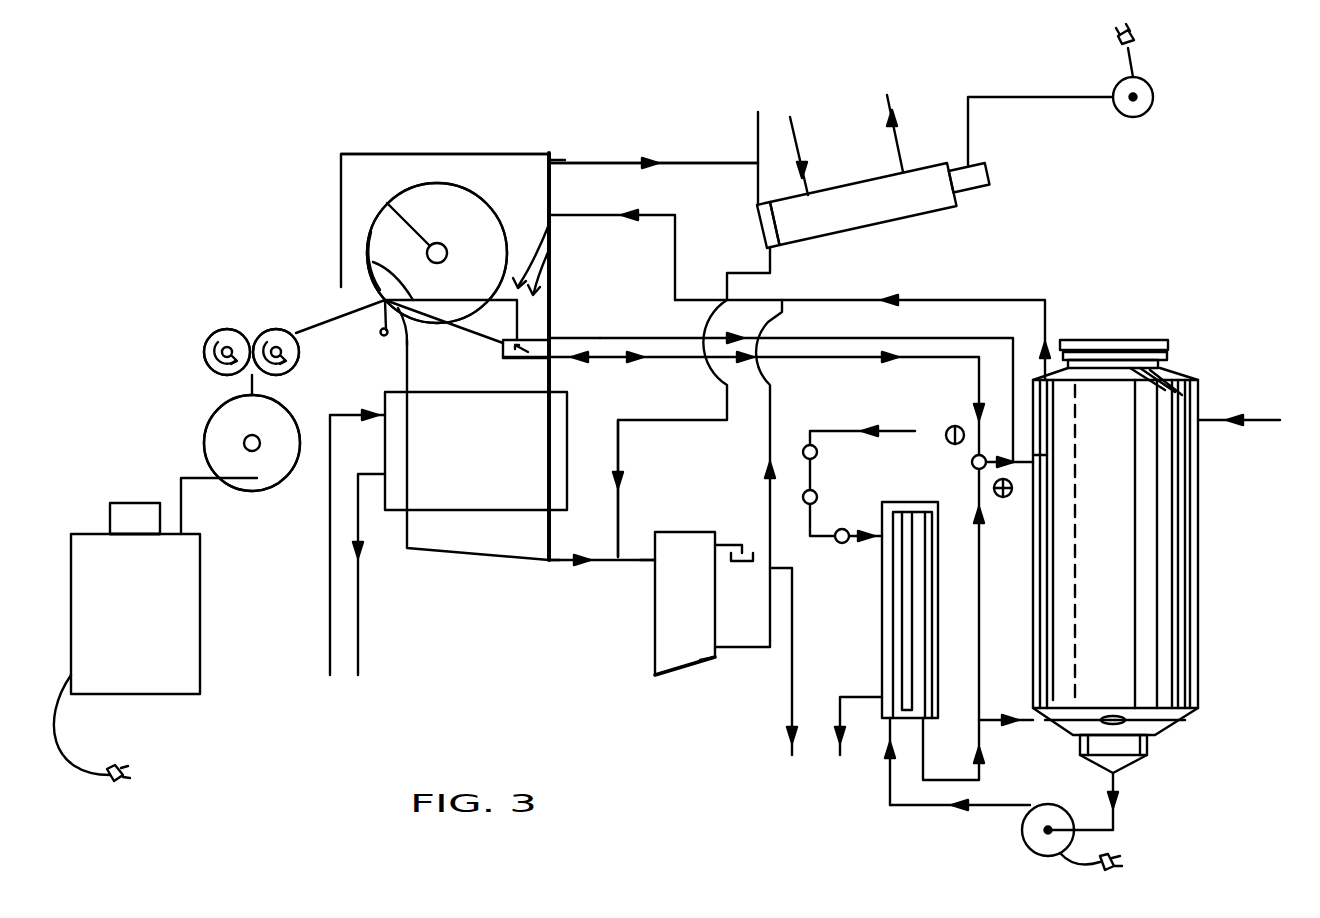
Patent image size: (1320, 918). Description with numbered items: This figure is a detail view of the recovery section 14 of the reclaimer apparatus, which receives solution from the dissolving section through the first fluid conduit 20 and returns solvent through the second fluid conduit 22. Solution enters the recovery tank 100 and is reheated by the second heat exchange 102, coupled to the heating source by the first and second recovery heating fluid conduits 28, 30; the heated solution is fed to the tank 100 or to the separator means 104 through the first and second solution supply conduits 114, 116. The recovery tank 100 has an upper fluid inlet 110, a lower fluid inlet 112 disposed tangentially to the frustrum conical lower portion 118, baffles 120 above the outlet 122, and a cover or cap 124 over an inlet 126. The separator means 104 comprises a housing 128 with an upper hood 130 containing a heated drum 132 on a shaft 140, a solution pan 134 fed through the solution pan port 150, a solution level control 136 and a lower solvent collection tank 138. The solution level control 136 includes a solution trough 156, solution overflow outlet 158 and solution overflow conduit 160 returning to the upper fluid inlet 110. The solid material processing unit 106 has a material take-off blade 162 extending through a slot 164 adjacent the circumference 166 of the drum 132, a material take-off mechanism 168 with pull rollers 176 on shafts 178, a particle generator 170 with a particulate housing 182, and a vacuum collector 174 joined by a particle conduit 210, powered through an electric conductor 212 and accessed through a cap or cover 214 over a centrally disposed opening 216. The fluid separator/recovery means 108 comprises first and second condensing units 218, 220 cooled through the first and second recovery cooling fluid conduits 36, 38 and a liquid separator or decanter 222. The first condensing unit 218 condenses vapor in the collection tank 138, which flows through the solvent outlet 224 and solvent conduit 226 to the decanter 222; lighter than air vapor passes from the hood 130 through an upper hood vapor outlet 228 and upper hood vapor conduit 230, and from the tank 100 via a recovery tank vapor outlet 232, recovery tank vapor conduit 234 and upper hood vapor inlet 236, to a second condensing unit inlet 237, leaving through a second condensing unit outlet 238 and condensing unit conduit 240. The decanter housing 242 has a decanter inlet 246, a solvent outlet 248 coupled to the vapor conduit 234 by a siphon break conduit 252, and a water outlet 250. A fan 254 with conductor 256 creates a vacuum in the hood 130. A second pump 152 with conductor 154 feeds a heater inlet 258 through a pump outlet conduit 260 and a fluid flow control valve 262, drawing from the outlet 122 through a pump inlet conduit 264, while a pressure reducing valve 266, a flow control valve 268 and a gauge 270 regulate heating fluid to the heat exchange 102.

The recovery section 14 is at (434, 50).
The first fluid conduit 20 is at (1262, 422).
The second fluid conduit 22 is at (792, 700).
The first recovery heating fluid conduit 28 is at (890, 431).
The second recovery heating fluid conduit 30 is at (870, 697).
The first recovery cooling fluid conduit 36 is at (803, 143).
The second recovery cooling fluid conduit 38 is at (900, 150).
The recovery tank 100 is at (1198, 492).
The second heat exchange 102 is at (882, 600).
The separator means 104 is at (313, 130).
The solid material processing unit 106 is at (190, 256).
The fluid separator/recovery means 108 is at (690, 86).
The upper fluid inlet 110 is at (1042, 465).
The lower fluid inlet 112 is at (1185, 716).
The first solution supply conduit 114 is at (1033, 722).
The second solution supply conduit 116 is at (795, 358).
The frustrum conical lower portion 118 is at (1165, 730).
The baffles 120 is at (1045, 640).
The outlet 122 is at (1140, 760).
The cover or cap 124 is at (1100, 340).
The inlet 126 is at (1175, 385).
The housing 128 is at (472, 197).
The upper hood 130 is at (383, 173).
The heated drum 132 is at (466, 153).
The solution pan 134 is at (373, 262).
The solution level control 136 is at (560, 215).
The lower solvent collection tank 138 is at (462, 553).
The shaft 140 is at (385, 202).
The solution pan port 150 is at (530, 352).
The second pump 152 is at (1022, 832).
The conductor 154 is at (1118, 862).
The solution trough 156 is at (549, 252).
The solution overflow outlet 158 is at (558, 330).
The solution overflow conduit 160 is at (790, 338).
The material take-off blade 162 is at (388, 335).
The slot 164 is at (378, 295).
The circumference 166 is at (371, 232).
The material take-off mechanism 168 is at (247, 280).
The particle generator 170 is at (180, 408).
The vacuum collector 174 is at (200, 673).
The pull rollers 176 is at (205, 356).
The shaft 178 is at (207, 345).
The particulate housing 182 is at (204, 448).
The particle conduit 210 is at (181, 520).
The electric conductor 212 is at (80, 760).
The cap or cover 214 is at (118, 503).
The centrally disposed opening 216 is at (110, 540).
The first condensing unit 218 is at (448, 510).
The second condensing unit 220 is at (870, 225).
The liquid separator or decanter 222 is at (648, 650).
The solvent outlet 224 is at (548, 563).
The solvent conduit 226 is at (566, 562).
The upper hood vapor outlet 228 is at (553, 158).
The upper hood vapor conduit 230 is at (748, 157).
The recovery tank vapor outlet 232 is at (1042, 385).
The recovery tank vapor conduit 234 is at (985, 300).
The upper hood vapor inlet 236 is at (557, 210).
The second condensing unit inlet 237 is at (755, 208).
The second condensing unit outlet 238 is at (768, 243).
The condensing unit conduit 240 is at (620, 452).
The housing 242 is at (678, 670).
The decanter inlet 246 is at (652, 560).
The solvent outlet 248 is at (712, 655).
The water outlet 250 is at (705, 537).
The siphon break conduit 252 is at (768, 500).
The fan 254 is at (1148, 108).
The conductor 256 is at (1145, 56).
The heater inlet 258 is at (888, 722).
The pump outlet conduit 260 is at (890, 808).
The fluid flow control valve 262 is at (968, 462).
The pump inlet conduit 264 is at (1100, 832).
The pressure reducing valve 266 is at (818, 452).
The valve 268 is at (834, 532).
The gauge 270 is at (818, 492).